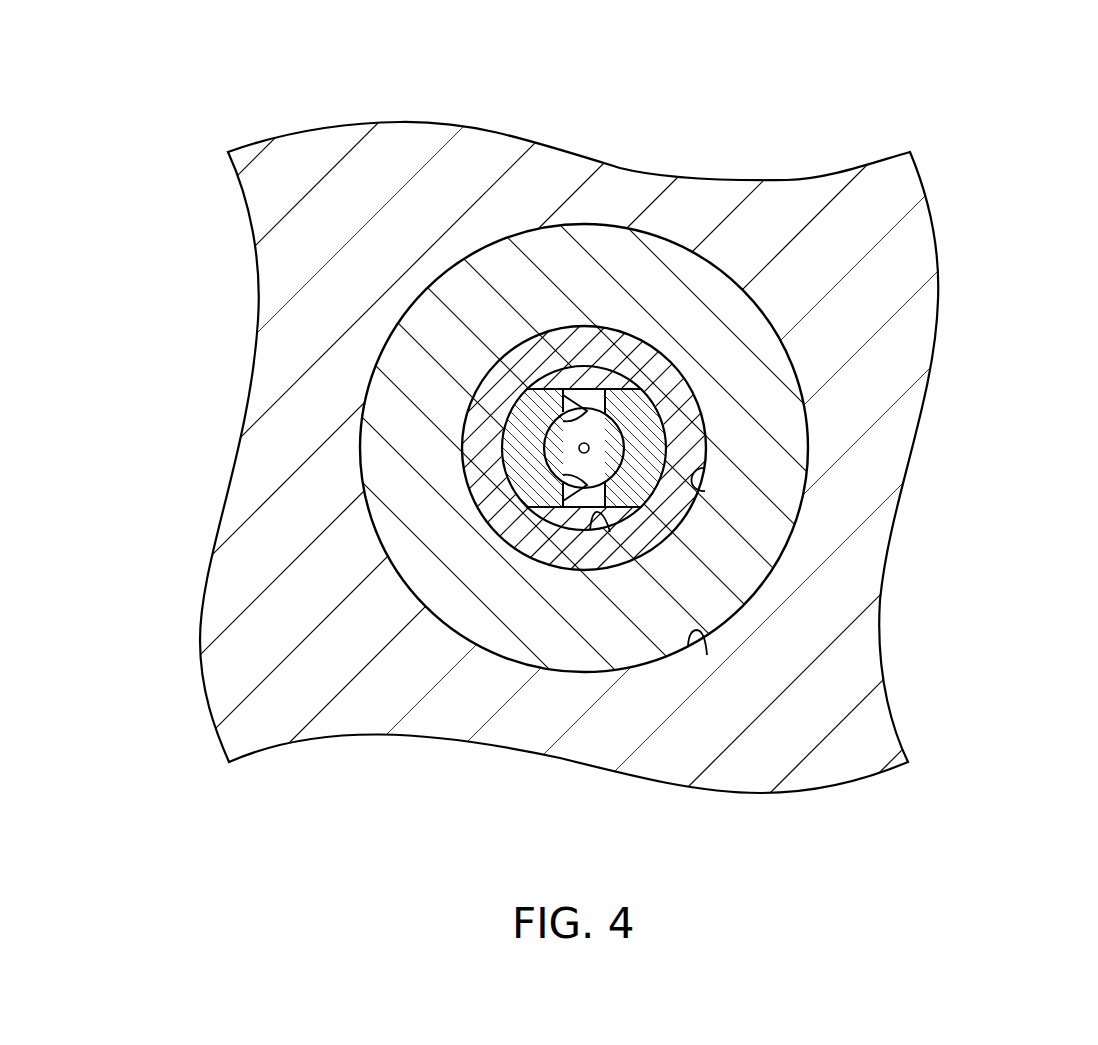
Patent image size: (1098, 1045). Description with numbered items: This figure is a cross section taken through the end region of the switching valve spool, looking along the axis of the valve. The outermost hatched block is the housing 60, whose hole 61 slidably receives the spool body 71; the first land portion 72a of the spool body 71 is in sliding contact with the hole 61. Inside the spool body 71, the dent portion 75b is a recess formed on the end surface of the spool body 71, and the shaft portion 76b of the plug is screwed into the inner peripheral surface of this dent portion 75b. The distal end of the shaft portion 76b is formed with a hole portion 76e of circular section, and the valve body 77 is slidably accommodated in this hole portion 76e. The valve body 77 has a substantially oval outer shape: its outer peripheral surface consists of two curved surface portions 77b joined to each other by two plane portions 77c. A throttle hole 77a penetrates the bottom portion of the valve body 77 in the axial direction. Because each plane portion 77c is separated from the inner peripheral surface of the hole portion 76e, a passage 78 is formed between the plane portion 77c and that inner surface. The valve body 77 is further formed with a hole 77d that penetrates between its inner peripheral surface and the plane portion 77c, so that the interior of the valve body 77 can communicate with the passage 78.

The housing 60 is at (280, 720).
The hole 61 is at (707, 655).
The spool body 71 is at (699, 257).
The first land portion 72a is at (765, 343).
The dent portion 75b is at (705, 495).
The shaft portion 76b is at (513, 525).
The hole portion 76e is at (610, 532).
The valve body 77 is at (617, 389).
The throttle hole 77a is at (579, 448).
The curved surface portion 77b is at (540, 497).
The plane portion 77c is at (562, 388).
The hole 77d is at (563, 421).
The passage 78 is at (581, 382).